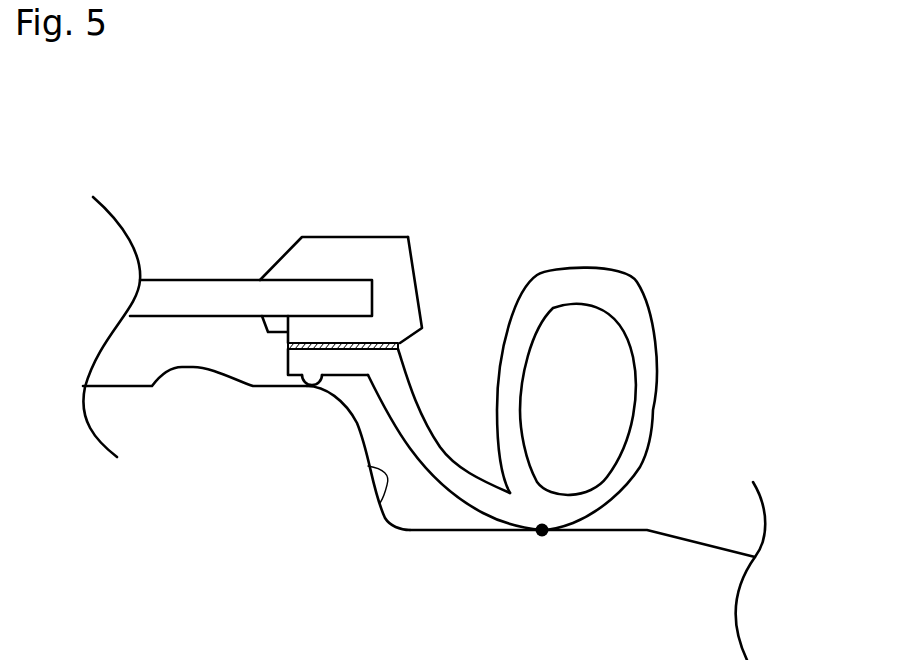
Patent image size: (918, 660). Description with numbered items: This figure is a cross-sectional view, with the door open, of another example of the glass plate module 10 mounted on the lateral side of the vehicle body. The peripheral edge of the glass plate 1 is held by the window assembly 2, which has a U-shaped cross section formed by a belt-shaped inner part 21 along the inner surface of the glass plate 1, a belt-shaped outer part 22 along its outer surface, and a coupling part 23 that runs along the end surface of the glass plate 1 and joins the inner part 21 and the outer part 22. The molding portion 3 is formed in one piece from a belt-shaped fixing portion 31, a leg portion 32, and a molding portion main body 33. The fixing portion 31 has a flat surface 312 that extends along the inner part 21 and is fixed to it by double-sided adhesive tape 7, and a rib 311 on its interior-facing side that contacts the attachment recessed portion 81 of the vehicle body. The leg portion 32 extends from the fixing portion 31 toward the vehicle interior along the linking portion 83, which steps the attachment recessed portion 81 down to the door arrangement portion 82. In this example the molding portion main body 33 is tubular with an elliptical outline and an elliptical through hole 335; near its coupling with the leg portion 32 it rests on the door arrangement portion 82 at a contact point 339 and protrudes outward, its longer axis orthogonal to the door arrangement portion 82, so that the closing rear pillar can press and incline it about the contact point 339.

The glass plate 1 is at (210, 293).
The window assembly 2 is at (298, 231).
The molding portion 3 is at (682, 270).
The double-sided adhesive tape 7 is at (312, 353).
The glass plate module 10 is at (306, 140).
The inner part 21 is at (313, 332).
The outer part 22 is at (343, 255).
The coupling part 23 is at (403, 287).
The fixing portion 31 is at (390, 406).
The leg portion 32 is at (353, 365).
The molding portion main body 33 is at (662, 432).
The attachment recessed portion 81 is at (130, 386).
The door arrangement portion 82 is at (593, 530).
The linking portion 83 is at (383, 498).
The rib 311 is at (310, 380).
The flat surface 312 is at (350, 340).
The through hole 335 is at (556, 415).
The contact point 339 is at (546, 534).